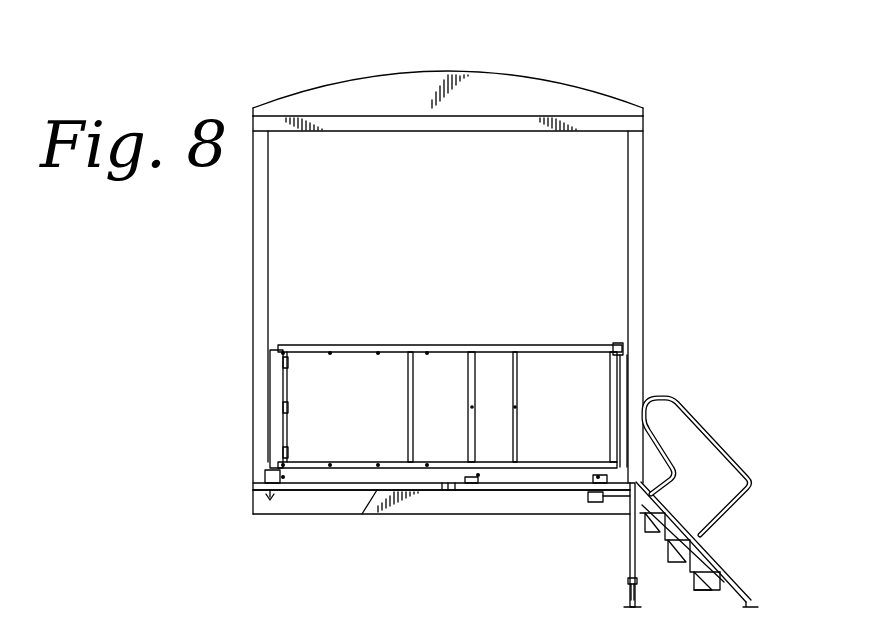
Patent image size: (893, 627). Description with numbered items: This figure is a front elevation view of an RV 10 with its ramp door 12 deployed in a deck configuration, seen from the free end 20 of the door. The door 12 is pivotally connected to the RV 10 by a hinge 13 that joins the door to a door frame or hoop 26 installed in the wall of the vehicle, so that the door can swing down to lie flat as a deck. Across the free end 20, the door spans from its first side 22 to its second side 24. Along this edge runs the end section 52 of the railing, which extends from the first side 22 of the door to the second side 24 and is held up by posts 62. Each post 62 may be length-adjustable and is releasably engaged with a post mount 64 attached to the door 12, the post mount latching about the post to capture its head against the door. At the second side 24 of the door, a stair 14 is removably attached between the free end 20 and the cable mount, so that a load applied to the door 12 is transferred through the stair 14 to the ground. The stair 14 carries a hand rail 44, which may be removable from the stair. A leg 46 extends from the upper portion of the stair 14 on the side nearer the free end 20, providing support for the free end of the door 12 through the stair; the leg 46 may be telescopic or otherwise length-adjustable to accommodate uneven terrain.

The RV 10 is at (256, 93).
The ramp door 12 is at (375, 494).
The hinge 13 is at (597, 502).
The stair 14 is at (690, 589).
The free end 20 is at (528, 506).
The first side 22 is at (460, 306).
The second side 24 is at (628, 514).
The door frame 26 is at (643, 188).
The hand rail 44 is at (724, 430).
The leg 46 is at (630, 570).
The end section 52 is at (415, 345).
The posts 62 is at (287, 477).
The post mounts 64 is at (283, 480).